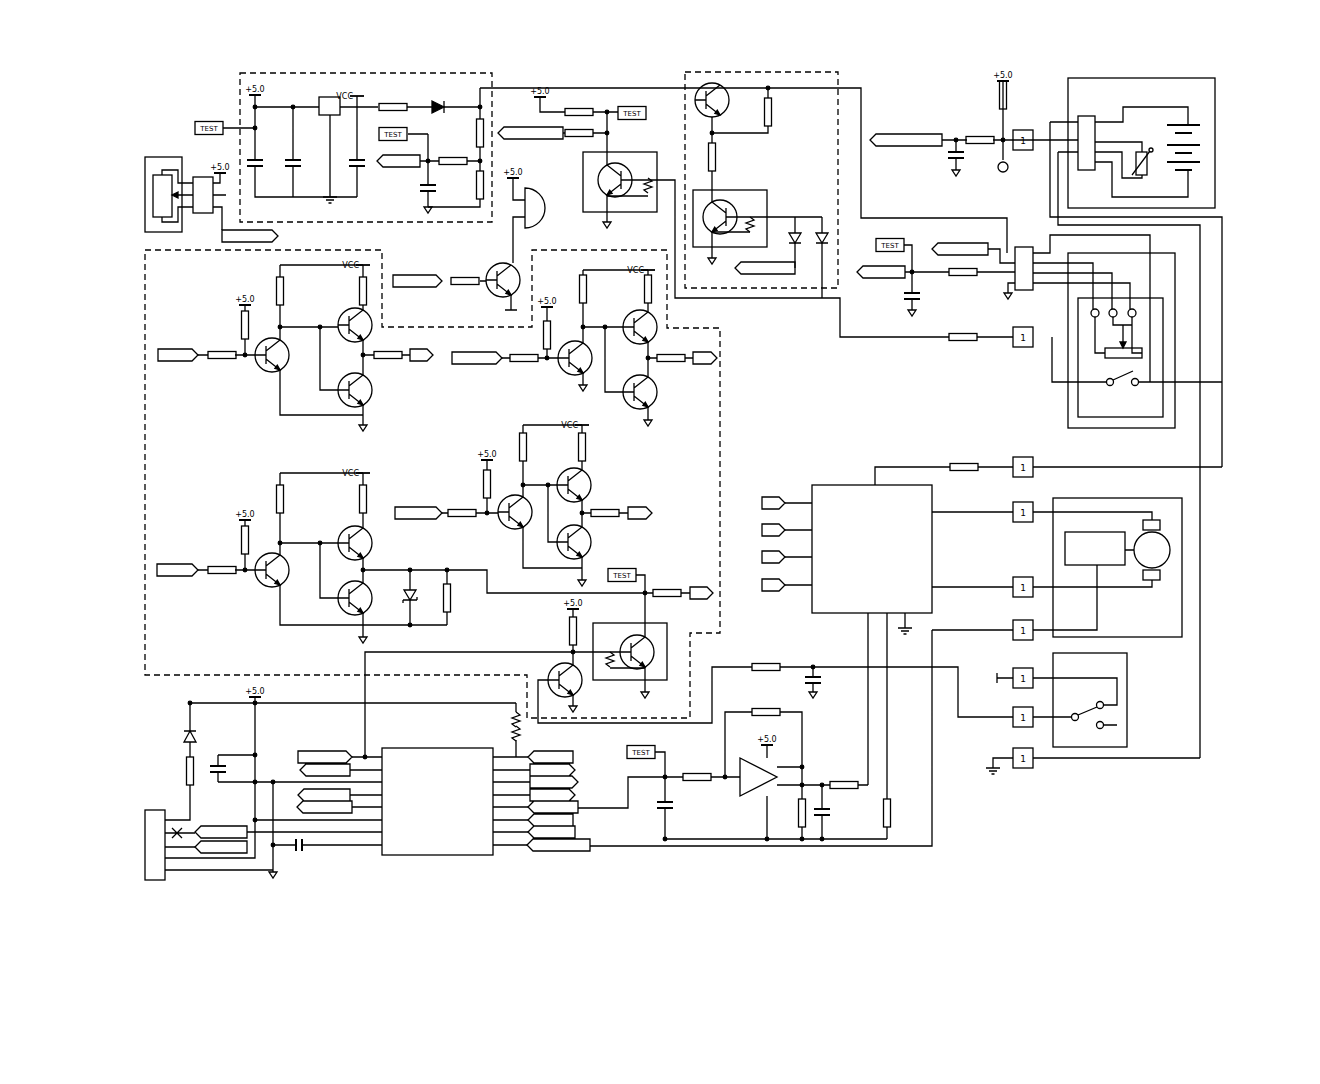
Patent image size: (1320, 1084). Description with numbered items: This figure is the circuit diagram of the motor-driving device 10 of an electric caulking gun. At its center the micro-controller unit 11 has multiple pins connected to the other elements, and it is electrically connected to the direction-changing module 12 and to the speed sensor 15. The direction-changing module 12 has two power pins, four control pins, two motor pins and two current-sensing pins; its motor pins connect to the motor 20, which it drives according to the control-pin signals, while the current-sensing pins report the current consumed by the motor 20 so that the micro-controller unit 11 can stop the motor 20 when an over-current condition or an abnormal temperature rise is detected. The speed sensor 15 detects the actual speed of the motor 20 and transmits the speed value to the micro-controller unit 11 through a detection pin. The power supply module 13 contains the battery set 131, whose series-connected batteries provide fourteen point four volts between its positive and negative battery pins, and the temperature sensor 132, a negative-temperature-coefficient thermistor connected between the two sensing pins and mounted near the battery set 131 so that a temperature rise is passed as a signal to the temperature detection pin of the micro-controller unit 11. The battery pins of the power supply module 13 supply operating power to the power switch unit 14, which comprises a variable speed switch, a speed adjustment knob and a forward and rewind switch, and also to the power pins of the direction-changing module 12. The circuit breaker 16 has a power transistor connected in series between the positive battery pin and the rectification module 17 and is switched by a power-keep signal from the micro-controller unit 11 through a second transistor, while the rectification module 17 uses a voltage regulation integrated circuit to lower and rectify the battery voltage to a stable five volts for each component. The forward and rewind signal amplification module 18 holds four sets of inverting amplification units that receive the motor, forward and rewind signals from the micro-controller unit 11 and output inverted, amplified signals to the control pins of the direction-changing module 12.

The motor-driving device 10 is at (1009, 827).
The micro-controller unit 11 is at (437, 855).
The direction-changing module 12 is at (853, 485).
The power supply module 13 is at (1215, 153).
The battery set 131 is at (1200, 123).
The temperature sensor 132 is at (1147, 167).
The power switch unit 14 is at (1165, 337).
The speed sensor 15 is at (1110, 565).
The circuit breaker 16 is at (848, 108).
The rectification module 17 is at (240, 92).
The forward and rewind signal amplification module 18 is at (143, 463).
The motor 20 is at (1170, 556).